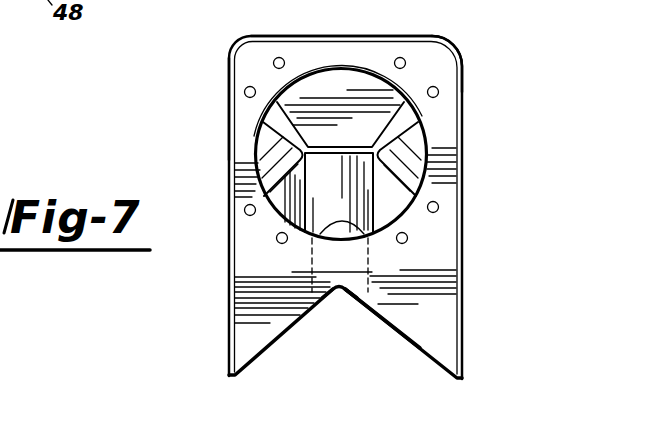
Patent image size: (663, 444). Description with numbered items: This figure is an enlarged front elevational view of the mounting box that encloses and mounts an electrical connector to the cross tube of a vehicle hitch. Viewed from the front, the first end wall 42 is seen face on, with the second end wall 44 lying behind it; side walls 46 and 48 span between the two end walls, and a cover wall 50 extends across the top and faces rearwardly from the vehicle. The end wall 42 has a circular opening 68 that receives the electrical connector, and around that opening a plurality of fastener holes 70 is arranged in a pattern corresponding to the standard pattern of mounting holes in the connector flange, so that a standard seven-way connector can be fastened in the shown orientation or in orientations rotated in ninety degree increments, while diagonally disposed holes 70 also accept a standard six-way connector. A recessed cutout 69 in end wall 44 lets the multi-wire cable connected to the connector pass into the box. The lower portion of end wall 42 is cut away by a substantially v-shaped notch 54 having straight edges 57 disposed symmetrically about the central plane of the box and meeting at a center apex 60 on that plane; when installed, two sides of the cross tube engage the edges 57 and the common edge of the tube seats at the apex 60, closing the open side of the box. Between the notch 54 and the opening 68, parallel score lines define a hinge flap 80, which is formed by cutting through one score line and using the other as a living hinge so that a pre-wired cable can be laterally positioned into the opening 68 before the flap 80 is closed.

The first end wall 42 is at (443, 322).
The second end wall 44 is at (360, 190).
The side wall 46 is at (464, 87).
The side wall 48 is at (229, 146).
The cover wall 50 is at (342, 36).
The notch 54 is at (383, 335).
The straight edges 57 is at (267, 351).
The center apex 60 is at (341, 292).
The circular opening 68 is at (421, 177).
The recessed cutout 69 is at (345, 236).
The fastener holes 70 is at (279, 57).
The hinge flap 80 is at (356, 270).